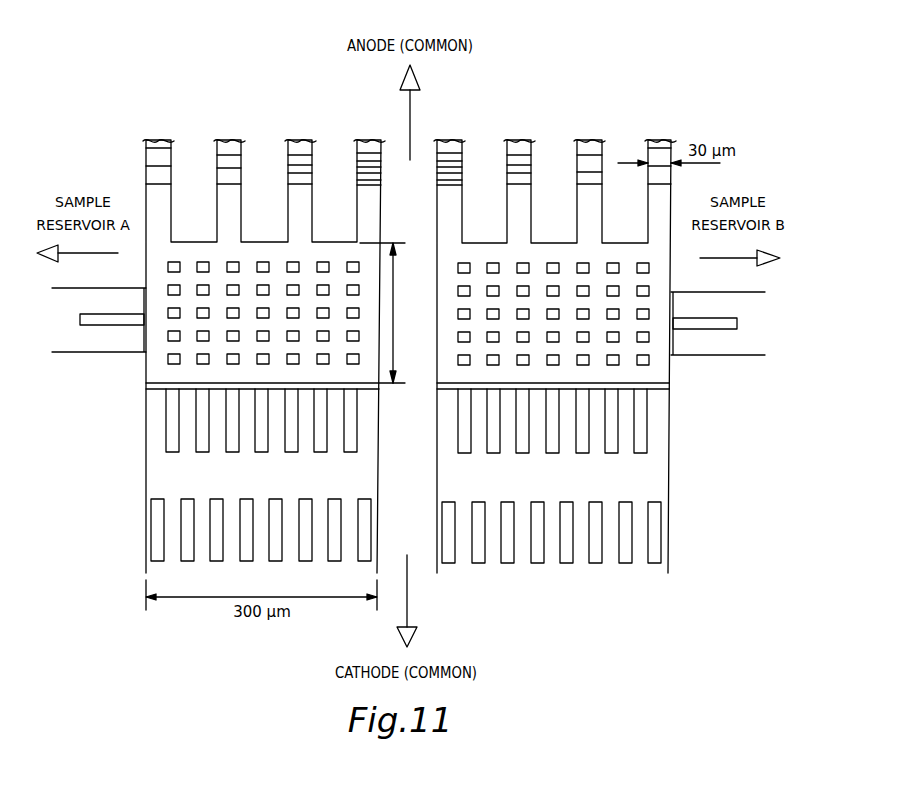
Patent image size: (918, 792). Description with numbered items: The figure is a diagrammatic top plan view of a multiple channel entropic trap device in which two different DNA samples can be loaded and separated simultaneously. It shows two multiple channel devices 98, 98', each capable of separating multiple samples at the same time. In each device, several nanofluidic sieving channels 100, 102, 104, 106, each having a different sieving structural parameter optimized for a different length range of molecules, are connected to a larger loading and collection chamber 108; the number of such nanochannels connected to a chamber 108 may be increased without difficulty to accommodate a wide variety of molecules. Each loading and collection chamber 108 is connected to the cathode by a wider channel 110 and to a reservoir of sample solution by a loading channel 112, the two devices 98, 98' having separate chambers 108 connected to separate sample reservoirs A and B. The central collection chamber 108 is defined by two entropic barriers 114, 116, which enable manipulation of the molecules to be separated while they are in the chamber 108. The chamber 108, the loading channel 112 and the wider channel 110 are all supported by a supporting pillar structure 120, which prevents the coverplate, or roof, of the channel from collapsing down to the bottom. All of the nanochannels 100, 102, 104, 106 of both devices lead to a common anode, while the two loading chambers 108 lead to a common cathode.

The multiple channel device 98 is at (259, 316).
The multiple channel device 98' is at (563, 316).
The nanofluidic sieving channel 100 is at (162, 139).
The nanofluidic sieving channel 102 is at (232, 139).
The nanofluidic sieving channel 104 is at (303, 139).
The nanofluidic sieving channel 106 is at (374, 139).
The loading and collection chamber 108 is at (398, 313).
The wider channel 110 is at (178, 480).
The loading channel 112 is at (58, 327).
The entropic barrier 114 is at (152, 391).
The entropic barrier 116 is at (143, 300).
The supporting pillar structure 120 is at (172, 337).